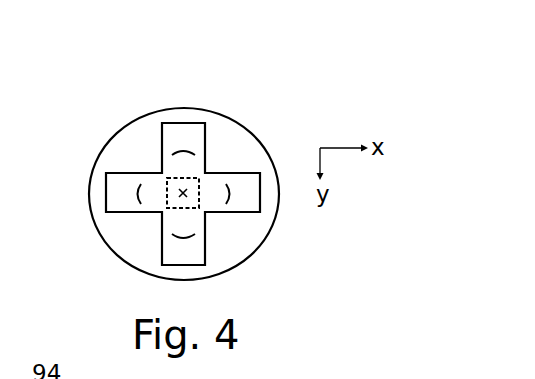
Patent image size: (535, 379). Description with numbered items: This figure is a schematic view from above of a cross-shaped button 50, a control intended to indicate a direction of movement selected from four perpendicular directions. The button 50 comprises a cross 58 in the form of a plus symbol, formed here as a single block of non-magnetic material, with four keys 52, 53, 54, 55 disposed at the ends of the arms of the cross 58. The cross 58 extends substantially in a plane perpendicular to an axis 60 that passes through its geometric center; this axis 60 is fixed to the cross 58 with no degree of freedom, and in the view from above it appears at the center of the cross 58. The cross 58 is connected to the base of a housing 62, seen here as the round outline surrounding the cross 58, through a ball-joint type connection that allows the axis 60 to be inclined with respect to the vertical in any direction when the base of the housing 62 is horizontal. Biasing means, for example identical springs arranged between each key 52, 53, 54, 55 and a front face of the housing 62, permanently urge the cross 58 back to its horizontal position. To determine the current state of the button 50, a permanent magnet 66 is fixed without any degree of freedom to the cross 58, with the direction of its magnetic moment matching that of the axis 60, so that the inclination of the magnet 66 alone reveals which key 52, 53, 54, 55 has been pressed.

The cross-shaped button 50 is at (263, 72).
The key 52 is at (183, 128).
The key 53 is at (172, 243).
The key 54 is at (112, 193).
The key 55 is at (253, 193).
The cross 58 is at (207, 151).
The axis 60 is at (183, 193).
The housing 62 is at (250, 253).
The permanent magnet 66 is at (168, 208).